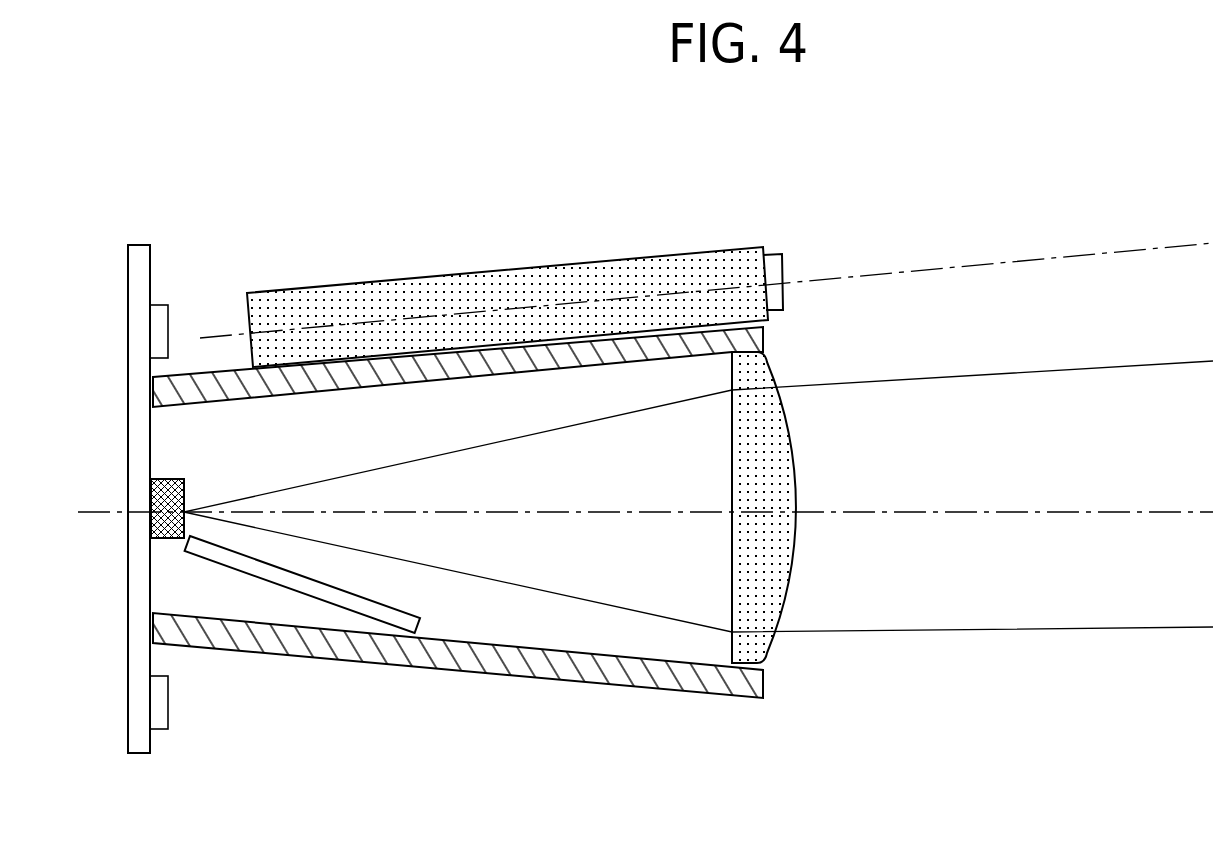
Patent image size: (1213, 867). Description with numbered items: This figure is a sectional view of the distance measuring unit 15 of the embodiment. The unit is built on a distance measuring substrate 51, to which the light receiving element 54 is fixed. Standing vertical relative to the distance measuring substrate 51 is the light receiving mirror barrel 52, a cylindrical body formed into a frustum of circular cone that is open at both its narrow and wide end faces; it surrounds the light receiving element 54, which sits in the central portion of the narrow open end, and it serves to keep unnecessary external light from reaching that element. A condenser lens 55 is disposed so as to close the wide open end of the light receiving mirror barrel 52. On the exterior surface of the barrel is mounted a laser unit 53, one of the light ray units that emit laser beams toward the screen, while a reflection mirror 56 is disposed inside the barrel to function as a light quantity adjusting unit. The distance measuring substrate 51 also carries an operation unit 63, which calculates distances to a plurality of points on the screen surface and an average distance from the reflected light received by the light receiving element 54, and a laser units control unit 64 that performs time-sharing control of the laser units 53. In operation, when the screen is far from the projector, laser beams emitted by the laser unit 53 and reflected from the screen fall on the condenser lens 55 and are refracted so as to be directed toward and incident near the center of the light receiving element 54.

The distance measuring unit 15 is at (168, 150).
The distance measuring substrate 51 is at (138, 282).
The light receiving mirror barrel 52 is at (548, 665).
The laser unit 53 is at (404, 298).
The light receiving element 54 is at (151, 495).
The condenser lens 55 is at (772, 645).
The reflection mirror 56 is at (320, 592).
The operation unit 63 is at (167, 308).
The laser units control unit 64 is at (170, 730).